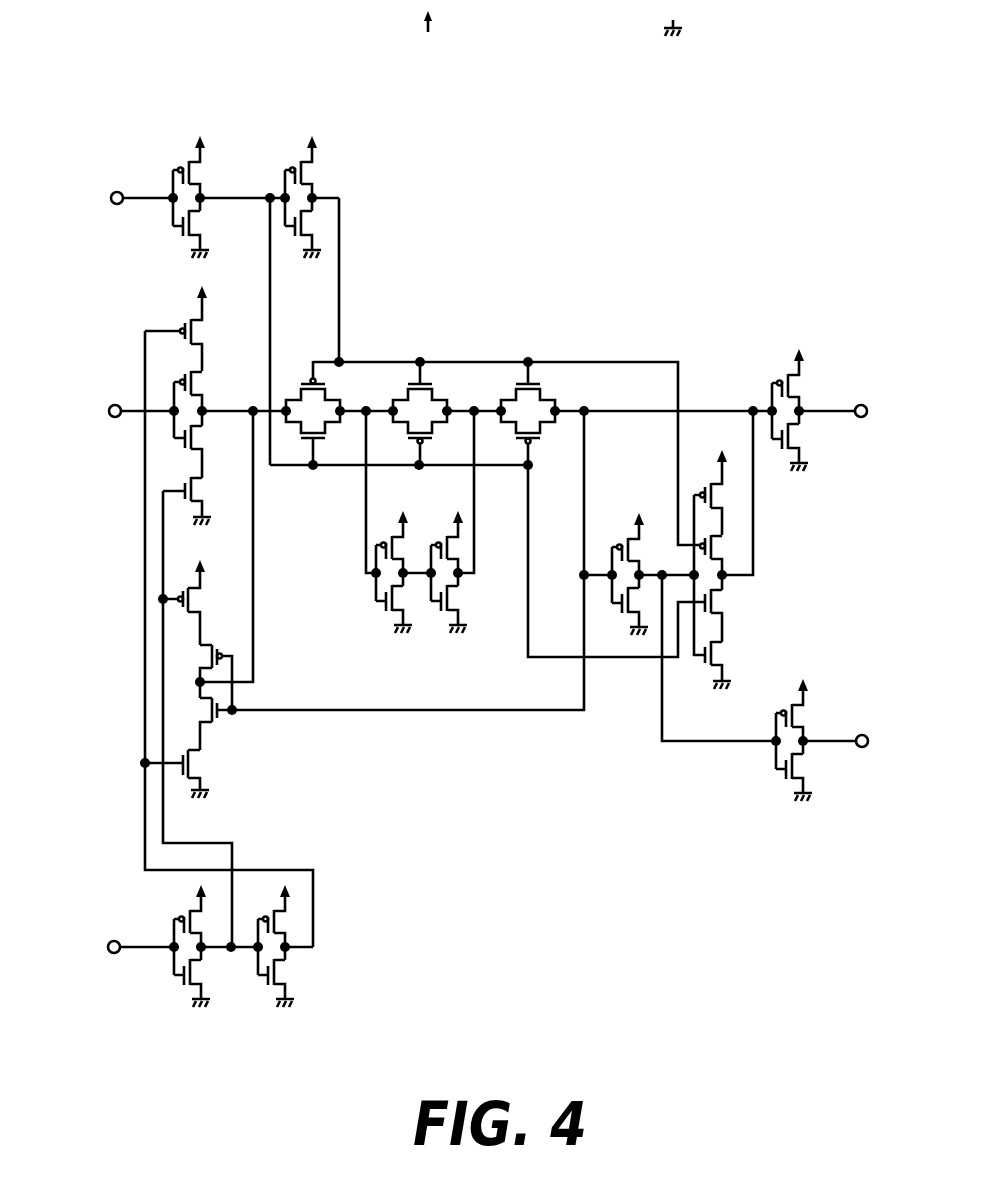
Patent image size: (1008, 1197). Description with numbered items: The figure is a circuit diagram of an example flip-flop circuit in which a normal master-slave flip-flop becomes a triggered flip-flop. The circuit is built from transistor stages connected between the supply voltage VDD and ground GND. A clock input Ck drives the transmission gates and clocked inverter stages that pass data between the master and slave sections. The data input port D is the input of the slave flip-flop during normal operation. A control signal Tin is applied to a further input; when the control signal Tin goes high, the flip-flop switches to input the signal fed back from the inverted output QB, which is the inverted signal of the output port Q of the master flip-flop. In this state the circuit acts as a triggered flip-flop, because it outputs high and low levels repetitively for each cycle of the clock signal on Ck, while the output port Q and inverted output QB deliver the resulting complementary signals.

The clock input Ck is at (201, 197).
The data input port D is at (180, 405).
The control signal Tin is at (187, 946).
The output port Q is at (726, 410).
The inverted output QB is at (788, 685).
The supply voltage VDD is at (505, 51).
The ground GND is at (746, 24).